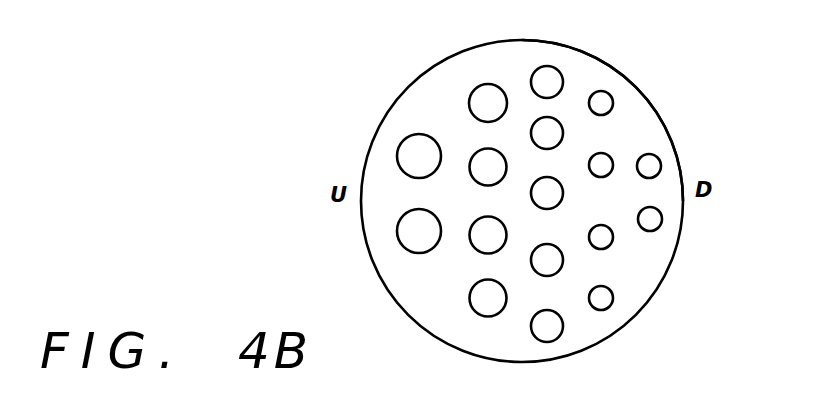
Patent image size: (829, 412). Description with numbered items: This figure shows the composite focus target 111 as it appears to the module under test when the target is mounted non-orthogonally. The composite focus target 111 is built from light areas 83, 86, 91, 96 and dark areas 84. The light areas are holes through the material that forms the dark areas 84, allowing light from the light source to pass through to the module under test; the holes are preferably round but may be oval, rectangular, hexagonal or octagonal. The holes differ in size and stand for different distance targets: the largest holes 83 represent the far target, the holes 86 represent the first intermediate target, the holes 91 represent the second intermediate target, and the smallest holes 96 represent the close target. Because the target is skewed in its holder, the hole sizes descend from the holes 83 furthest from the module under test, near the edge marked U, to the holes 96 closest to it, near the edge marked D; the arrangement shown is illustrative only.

The light area 83 is at (413, 155).
The dark area 84 is at (645, 272).
The light area 86 is at (487, 98).
The light area 91 is at (550, 80).
The light area 96 is at (653, 219).
The composite focus target 111 is at (670, 137).